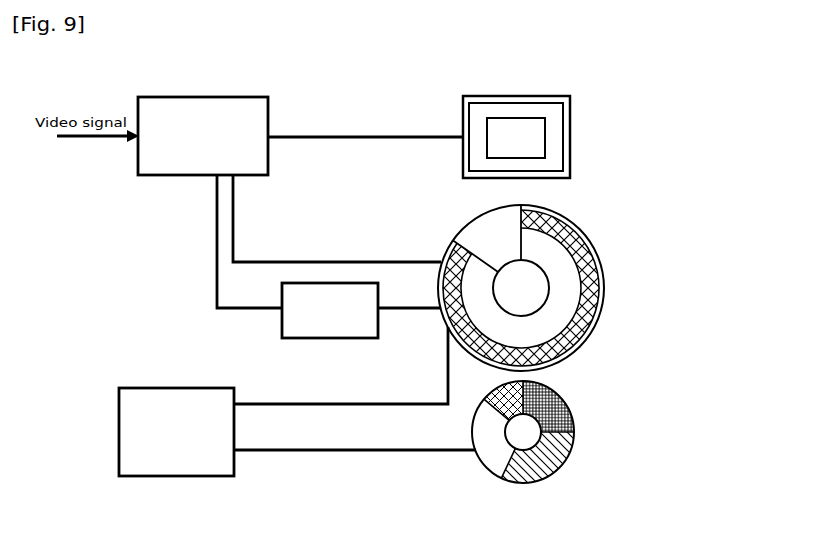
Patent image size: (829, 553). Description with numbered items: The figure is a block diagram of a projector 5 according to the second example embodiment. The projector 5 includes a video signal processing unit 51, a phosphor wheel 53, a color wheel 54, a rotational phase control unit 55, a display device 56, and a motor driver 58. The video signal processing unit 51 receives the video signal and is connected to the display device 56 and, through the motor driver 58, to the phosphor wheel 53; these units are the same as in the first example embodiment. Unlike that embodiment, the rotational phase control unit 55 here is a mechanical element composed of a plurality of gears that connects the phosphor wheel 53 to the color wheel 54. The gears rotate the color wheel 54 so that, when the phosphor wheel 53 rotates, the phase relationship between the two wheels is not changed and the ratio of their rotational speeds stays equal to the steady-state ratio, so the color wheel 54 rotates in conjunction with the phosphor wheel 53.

The projector 5 is at (665, 138).
The video signal processing unit 51 is at (168, 172).
The phosphor wheel 53 is at (601, 254).
The color wheel 54 is at (574, 416).
The rotational phase control unit 55 is at (119, 428).
The display device 56 is at (556, 161).
The motor driver 58 is at (345, 331).